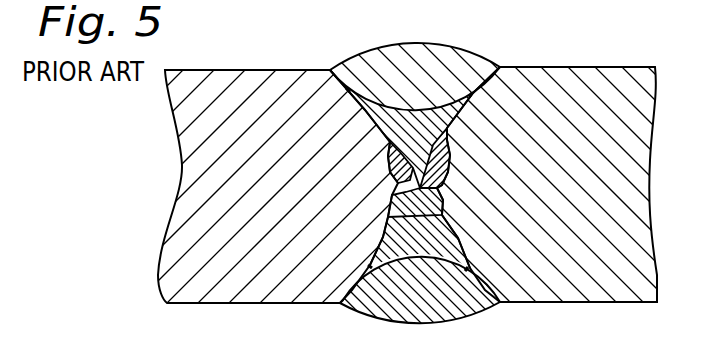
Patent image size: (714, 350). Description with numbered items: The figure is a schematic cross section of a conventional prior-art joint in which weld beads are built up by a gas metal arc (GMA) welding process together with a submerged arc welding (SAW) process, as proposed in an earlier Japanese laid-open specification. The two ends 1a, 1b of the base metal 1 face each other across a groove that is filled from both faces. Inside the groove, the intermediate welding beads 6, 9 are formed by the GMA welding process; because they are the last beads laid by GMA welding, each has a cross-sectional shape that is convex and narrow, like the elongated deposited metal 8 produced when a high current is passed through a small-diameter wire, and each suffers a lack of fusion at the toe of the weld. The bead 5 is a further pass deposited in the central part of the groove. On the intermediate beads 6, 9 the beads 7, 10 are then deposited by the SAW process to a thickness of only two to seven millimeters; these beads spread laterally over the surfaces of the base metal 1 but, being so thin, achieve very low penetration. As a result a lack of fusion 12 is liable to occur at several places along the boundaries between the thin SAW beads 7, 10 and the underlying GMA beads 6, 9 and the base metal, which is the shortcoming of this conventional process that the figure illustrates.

The base metal 1 is at (455, 174).
The end of the base metal 1a is at (233, 82).
The end of the base metal 1b is at (592, 76).
The weld pass 5 is at (438, 203).
The intermediate welding bead 6 is at (447, 238).
The bead 7 is at (462, 316).
The deposited metal 8 is at (450, 166).
The intermediate welding bead 9 is at (454, 120).
The bead 10 is at (483, 75).
The lack of fusion 12 is at (348, 92).